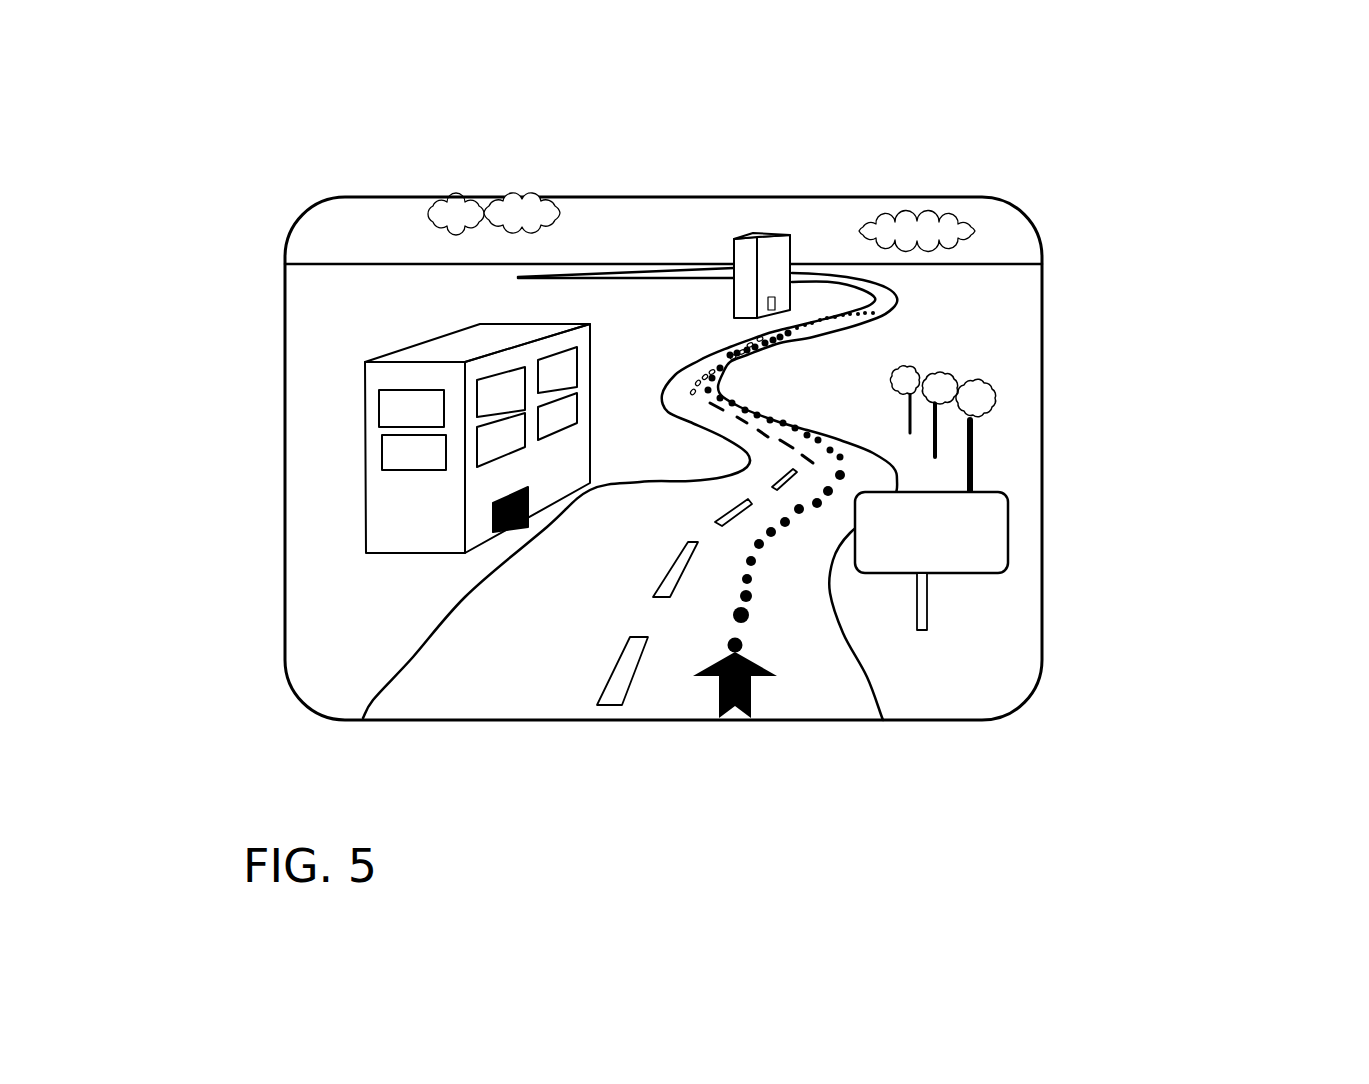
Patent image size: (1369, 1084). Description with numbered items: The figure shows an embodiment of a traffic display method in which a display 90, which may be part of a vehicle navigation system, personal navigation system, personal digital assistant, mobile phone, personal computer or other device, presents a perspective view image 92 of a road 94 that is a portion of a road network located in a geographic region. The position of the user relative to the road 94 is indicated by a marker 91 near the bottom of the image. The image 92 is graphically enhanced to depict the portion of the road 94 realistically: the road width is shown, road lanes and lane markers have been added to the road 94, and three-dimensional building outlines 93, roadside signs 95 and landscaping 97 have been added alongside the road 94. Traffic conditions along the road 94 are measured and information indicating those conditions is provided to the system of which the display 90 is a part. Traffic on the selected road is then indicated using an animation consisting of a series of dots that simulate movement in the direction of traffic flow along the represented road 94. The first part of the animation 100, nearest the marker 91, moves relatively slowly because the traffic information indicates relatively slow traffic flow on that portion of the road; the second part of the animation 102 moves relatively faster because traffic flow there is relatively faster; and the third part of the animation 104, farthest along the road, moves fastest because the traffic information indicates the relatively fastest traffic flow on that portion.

The display 90 is at (600, 190).
The marker 91 is at (707, 697).
The perspective view image 92 is at (345, 302).
The 3D building outlines 93 is at (360, 469).
The road 94 is at (447, 607).
The roadside signs 95 is at (1013, 535).
The landscaping 97 is at (1010, 410).
The first part of the animation 100 is at (755, 592).
The second part of the animation 102 is at (838, 422).
The third part of the animation 104 is at (795, 396).